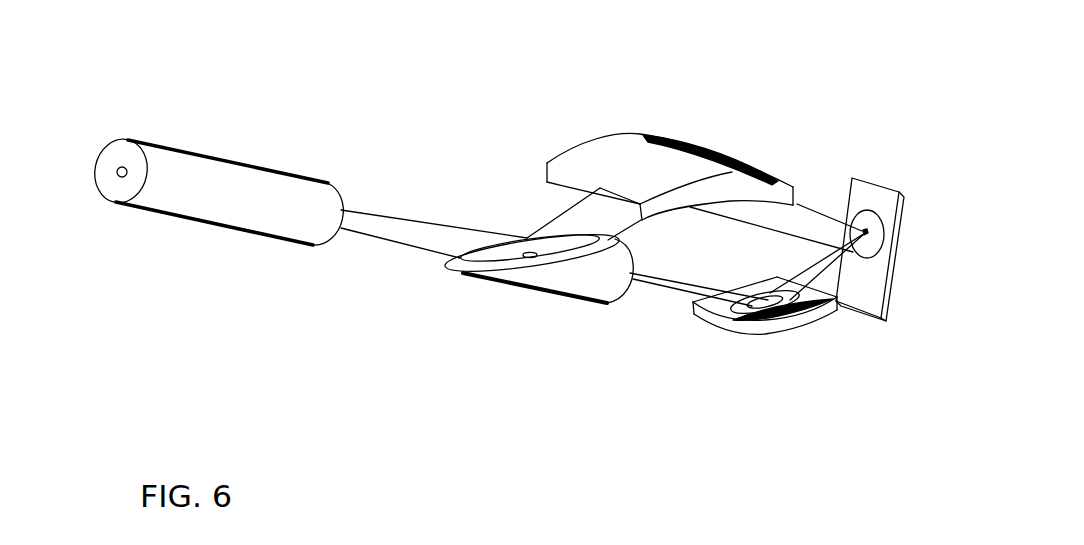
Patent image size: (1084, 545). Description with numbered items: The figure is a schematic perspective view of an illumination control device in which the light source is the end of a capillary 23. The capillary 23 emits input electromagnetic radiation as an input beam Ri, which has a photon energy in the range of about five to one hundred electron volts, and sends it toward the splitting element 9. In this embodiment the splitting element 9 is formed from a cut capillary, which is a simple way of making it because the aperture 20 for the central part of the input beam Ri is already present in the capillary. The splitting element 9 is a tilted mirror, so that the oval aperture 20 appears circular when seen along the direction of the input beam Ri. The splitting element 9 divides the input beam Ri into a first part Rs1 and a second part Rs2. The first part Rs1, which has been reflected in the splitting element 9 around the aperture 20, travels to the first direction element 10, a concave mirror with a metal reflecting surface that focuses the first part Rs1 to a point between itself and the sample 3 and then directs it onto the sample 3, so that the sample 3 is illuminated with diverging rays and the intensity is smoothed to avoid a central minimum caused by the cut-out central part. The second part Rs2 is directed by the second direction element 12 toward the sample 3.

The capillary 23 is at (223, 175).
The input electromagnetic radiation Ri is at (403, 215).
The splitting element 9 is at (545, 277).
The aperture 20 is at (530, 252).
The first direction element 10 is at (613, 153).
The first part of the input electromagnetic radiation Rs1 is at (694, 154).
The sample 3 is at (875, 192).
The second part of the input electromagnetic radiation Rs2 is at (665, 283).
The second direction element 12 is at (783, 323).